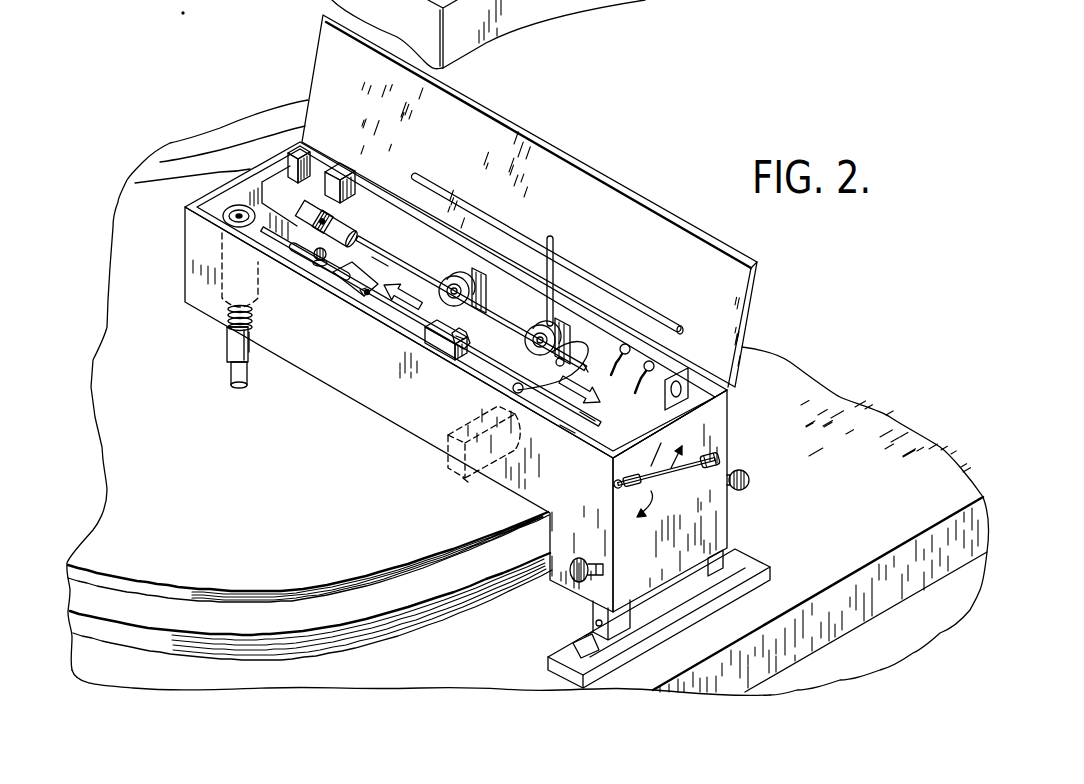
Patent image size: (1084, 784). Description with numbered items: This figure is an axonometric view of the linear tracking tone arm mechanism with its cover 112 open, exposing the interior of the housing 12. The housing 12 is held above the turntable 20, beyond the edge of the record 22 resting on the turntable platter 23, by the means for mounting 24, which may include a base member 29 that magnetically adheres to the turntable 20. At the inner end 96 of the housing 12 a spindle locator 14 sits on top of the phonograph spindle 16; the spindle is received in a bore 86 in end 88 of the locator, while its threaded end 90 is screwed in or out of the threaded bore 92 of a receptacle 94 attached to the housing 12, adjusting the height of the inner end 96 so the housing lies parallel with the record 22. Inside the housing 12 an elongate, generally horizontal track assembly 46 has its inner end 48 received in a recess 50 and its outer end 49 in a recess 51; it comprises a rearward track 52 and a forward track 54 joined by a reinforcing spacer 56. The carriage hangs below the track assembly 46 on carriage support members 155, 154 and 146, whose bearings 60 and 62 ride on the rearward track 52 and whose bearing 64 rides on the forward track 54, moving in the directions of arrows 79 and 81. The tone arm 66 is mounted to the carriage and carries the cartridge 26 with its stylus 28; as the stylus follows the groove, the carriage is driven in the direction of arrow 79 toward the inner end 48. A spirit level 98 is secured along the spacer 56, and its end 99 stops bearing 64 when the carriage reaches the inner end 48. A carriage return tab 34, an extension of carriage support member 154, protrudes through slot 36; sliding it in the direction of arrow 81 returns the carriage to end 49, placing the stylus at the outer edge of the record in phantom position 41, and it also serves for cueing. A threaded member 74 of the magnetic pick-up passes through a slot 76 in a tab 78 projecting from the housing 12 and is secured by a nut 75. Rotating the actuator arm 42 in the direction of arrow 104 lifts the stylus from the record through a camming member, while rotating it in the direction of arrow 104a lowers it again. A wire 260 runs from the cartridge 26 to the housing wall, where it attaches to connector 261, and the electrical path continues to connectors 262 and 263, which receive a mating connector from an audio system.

The housing 12 is at (390, 378).
The spindle locator 14 is at (231, 345).
The phonograph spindle 16 is at (233, 370).
The turntable 20 is at (882, 504).
The record 22 is at (245, 502).
The turntable platter 23 is at (430, 628).
The means for mounting 24 is at (700, 575).
The cartridge 26 is at (450, 470).
The stylus 28 is at (463, 476).
The base member 29 is at (682, 622).
The carriage return tab 34 is at (552, 247).
The slot 36 is at (583, 270).
The phantom position 41 is at (683, 330).
The actuator arm 42 is at (692, 460).
The track assembly 46 is at (630, 432).
The inner end of track 48 is at (280, 168).
The outer end of track 49 is at (567, 415).
The recess 50 is at (317, 182).
The recess 51 is at (718, 395).
The rearward track 52 is at (580, 353).
The forward track 54 is at (567, 410).
The reinforcing spacer 56 is at (372, 262).
The bearing 60 is at (450, 276).
The bearing 62 is at (532, 333).
The bearing 64 is at (468, 345).
The tone arm 66 is at (497, 413).
The threaded member 74 is at (312, 262).
The nut 75 is at (325, 268).
The slot 76 is at (336, 274).
The tab 78 is at (352, 280).
The arrow 79 is at (380, 270).
The arrow 81 is at (588, 405).
The bore 86 is at (228, 330).
The end of spindle locator 88 is at (246, 342).
The threaded end 90 is at (254, 314).
The threaded bore 92 is at (214, 229).
The receptacle 94 is at (229, 205).
The inner end of housing 96 is at (288, 200).
The spirit level 98 is at (342, 215).
The end of level 99 is at (357, 236).
The arrow 104 is at (681, 447).
The arrow 104a is at (653, 521).
The lid 112 is at (748, 311).
The carriage support member 146 is at (442, 343).
The carriage support member 154 is at (563, 320).
The carriage support member 155 is at (480, 257).
The wire 260 is at (561, 360).
The connector 261 is at (513, 390).
The connector 262 is at (623, 341).
The connector 263 is at (647, 360).